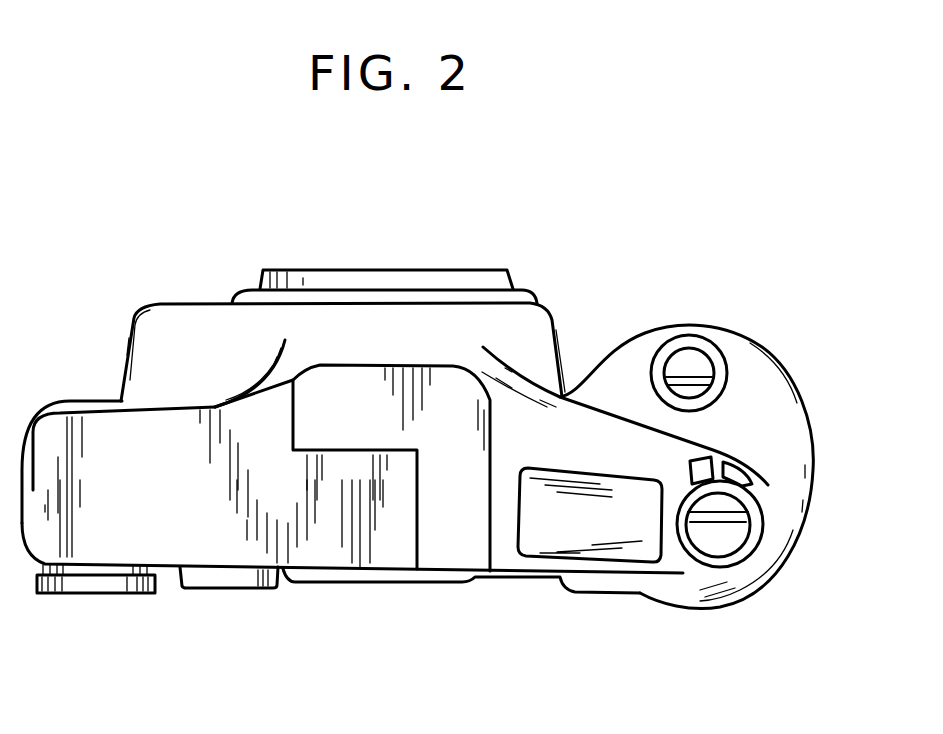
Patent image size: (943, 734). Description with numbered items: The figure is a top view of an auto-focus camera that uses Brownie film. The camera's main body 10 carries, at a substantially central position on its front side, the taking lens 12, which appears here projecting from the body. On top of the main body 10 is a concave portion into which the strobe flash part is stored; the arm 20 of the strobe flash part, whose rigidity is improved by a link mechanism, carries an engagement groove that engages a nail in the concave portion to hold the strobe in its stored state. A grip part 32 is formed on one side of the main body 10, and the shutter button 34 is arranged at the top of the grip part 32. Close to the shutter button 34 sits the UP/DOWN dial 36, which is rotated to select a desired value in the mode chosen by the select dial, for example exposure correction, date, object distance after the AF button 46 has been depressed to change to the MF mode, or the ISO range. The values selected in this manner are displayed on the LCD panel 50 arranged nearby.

The camera's main body 10 is at (85, 390).
The taking lens 12 is at (428, 268).
The arm 20 is at (443, 540).
The grip part 32 is at (753, 343).
The shutter button 34 is at (692, 362).
The UP/DOWN dial 36 is at (722, 537).
The AF button 46 is at (692, 460).
The LCD panel 50 is at (550, 540).